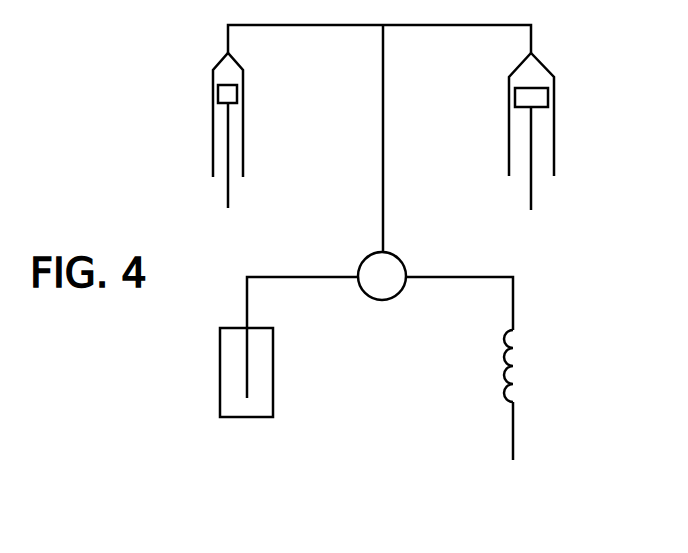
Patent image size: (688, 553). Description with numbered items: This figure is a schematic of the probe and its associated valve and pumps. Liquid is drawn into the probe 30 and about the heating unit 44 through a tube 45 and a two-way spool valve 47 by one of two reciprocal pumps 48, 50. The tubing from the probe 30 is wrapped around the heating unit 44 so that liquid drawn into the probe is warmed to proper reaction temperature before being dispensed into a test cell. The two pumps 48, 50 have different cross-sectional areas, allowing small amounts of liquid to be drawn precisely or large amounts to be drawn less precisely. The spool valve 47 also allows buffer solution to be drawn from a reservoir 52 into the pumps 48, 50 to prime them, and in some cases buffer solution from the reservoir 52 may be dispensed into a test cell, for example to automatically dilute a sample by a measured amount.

The reciprocal pump 48 is at (212, 110).
The reciprocal pump 50 is at (554, 125).
The two-way spool valve 47 is at (400, 262).
The tube 45 is at (500, 277).
The heating unit 44 is at (510, 377).
The probe 30 is at (513, 447).
The reservoir 52 is at (273, 390).